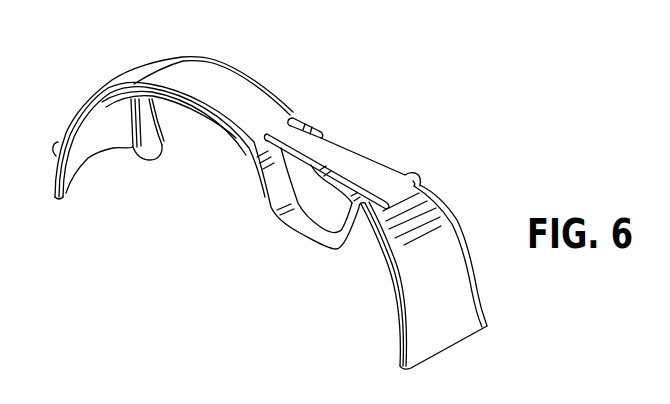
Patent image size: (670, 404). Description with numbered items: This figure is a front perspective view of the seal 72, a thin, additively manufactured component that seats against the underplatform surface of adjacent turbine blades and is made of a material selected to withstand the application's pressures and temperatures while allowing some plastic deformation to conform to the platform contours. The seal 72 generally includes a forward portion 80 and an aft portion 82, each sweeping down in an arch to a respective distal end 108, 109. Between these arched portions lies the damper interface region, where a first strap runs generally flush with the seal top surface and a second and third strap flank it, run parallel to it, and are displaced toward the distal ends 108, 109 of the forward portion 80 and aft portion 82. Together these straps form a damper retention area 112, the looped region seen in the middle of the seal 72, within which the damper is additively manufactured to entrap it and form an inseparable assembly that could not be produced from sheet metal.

The seal 72 is at (443, 147).
The aft portion 82 is at (99, 74).
The forward portion 80 is at (452, 320).
The damper retention area 112 is at (321, 199).
The distal end of the aft portion 109 is at (62, 200).
The distal end of the forward portion 108 is at (408, 370).